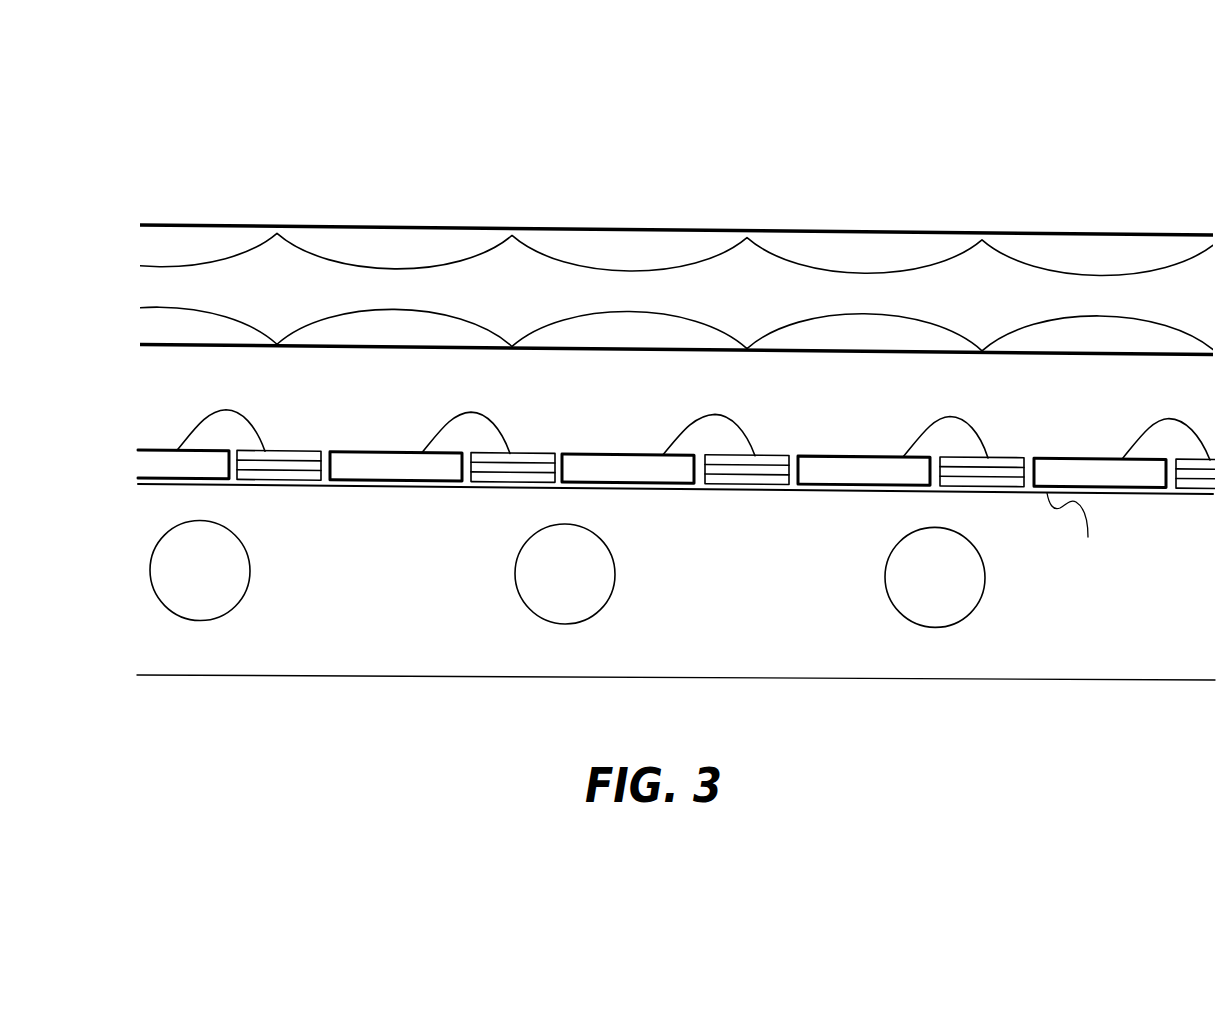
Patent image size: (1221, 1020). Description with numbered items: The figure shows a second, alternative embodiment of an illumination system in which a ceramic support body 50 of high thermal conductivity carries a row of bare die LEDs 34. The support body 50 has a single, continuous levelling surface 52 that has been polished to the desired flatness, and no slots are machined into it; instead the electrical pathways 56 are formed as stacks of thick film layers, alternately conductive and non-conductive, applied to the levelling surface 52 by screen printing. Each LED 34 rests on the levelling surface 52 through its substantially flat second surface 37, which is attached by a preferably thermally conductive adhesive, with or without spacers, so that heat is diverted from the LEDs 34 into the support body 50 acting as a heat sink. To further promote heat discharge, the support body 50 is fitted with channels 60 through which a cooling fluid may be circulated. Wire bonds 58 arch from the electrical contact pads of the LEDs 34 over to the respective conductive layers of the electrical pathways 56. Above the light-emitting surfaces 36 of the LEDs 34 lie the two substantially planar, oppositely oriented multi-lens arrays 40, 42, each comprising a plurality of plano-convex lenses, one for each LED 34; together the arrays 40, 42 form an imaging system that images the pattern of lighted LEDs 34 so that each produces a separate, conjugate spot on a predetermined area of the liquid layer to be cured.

The LEDs 34 is at (354, 460).
The light-emitting surface 36 is at (1047, 493).
The second surface 37 is at (1088, 537).
The multi-lens array 40 is at (126, 325).
The multi-lens array 42 is at (126, 242).
The support body 50 is at (669, 614).
The levelling surface 52 is at (390, 487).
The electrical pathways 56 is at (717, 462).
The wire bonds 58 is at (469, 411).
The channels 60 is at (942, 603).